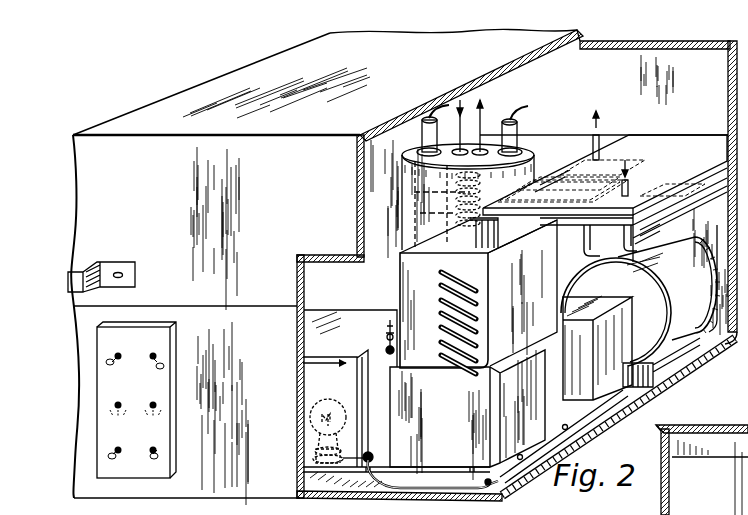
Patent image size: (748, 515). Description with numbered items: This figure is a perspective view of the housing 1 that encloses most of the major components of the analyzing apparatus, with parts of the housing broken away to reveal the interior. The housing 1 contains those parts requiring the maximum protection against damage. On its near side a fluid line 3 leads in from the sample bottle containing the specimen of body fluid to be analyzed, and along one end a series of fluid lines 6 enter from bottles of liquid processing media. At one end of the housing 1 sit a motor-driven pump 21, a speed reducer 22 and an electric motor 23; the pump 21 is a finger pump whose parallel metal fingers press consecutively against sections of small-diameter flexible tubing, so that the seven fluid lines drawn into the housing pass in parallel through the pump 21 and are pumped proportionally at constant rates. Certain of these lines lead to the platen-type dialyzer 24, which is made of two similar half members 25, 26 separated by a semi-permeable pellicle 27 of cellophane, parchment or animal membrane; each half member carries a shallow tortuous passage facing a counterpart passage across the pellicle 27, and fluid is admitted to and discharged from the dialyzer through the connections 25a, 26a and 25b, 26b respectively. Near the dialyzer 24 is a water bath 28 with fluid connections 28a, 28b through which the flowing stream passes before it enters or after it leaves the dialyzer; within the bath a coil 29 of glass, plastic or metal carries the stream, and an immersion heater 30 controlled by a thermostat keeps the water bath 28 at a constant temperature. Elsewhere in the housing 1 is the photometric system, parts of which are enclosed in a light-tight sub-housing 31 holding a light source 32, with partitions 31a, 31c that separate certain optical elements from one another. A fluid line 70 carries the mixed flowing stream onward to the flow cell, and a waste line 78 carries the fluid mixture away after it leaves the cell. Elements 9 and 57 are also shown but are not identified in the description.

The housing 1 is at (165, 96).
The fluid line 3 is at (479, 277).
The fluid lines 6 is at (478, 316).
The terminal panel 9 is at (150, 326).
The motor-driven pump 21 is at (478, 404).
The speed reducer 22 is at (612, 275).
The electric motor 23 is at (688, 265).
The platen-type dialyzer 24 is at (568, 160).
The half member 25 is at (692, 165).
The dialyzer connection 25a is at (622, 190).
The dialyzer connection 25b is at (600, 150).
The half member 26 is at (683, 218).
The dialyzer connection 26a is at (647, 232).
The dialyzer connection 26b is at (582, 250).
The semi-permeable pellicle 27 is at (662, 236).
The water bath 28 is at (410, 147).
The fluid connection 28a is at (457, 105).
The fluid connection 28b is at (512, 118).
The coil 29 is at (414, 192).
The immersion heater 30 is at (420, 213).
The light-tight sub-housing 31 is at (360, 290).
The partition 31a is at (386, 350).
The partition 31c is at (672, 488).
The light source 32 is at (306, 415).
The cover 57 is at (496, 250).
The fluid line 70 is at (391, 330).
The waste line 78 is at (400, 492).